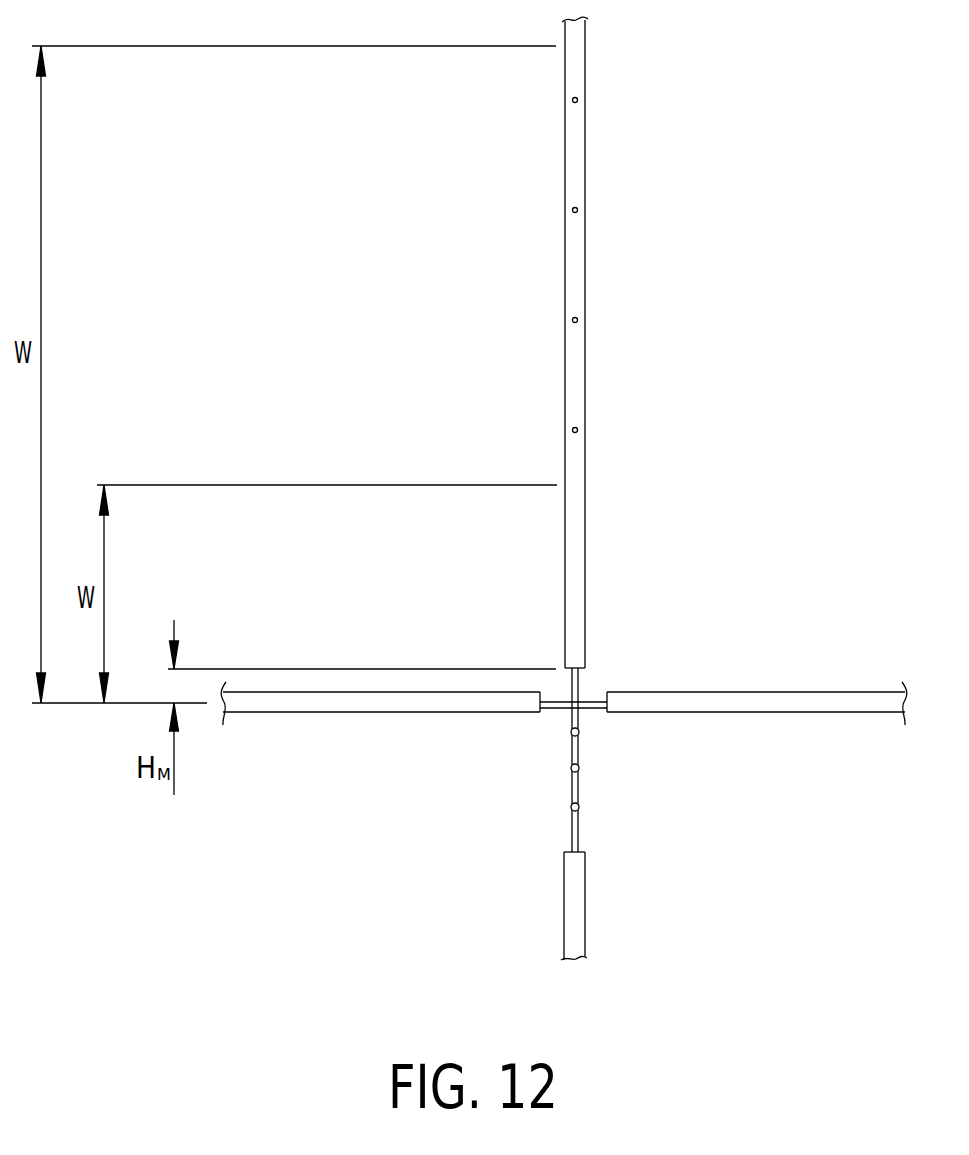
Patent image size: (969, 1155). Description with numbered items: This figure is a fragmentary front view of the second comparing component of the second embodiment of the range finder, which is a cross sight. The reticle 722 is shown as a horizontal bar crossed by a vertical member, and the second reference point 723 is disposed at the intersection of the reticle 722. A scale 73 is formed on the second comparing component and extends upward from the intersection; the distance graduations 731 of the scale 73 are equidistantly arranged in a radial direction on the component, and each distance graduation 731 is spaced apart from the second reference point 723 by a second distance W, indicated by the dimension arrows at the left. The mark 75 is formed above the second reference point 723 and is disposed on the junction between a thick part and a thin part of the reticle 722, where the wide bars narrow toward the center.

The scale 73 is at (580, 265).
The distance graduations 731 is at (580, 153).
The reticle 722 is at (367, 708).
The second reference point 723 is at (575, 705).
The mark 75 is at (580, 672).